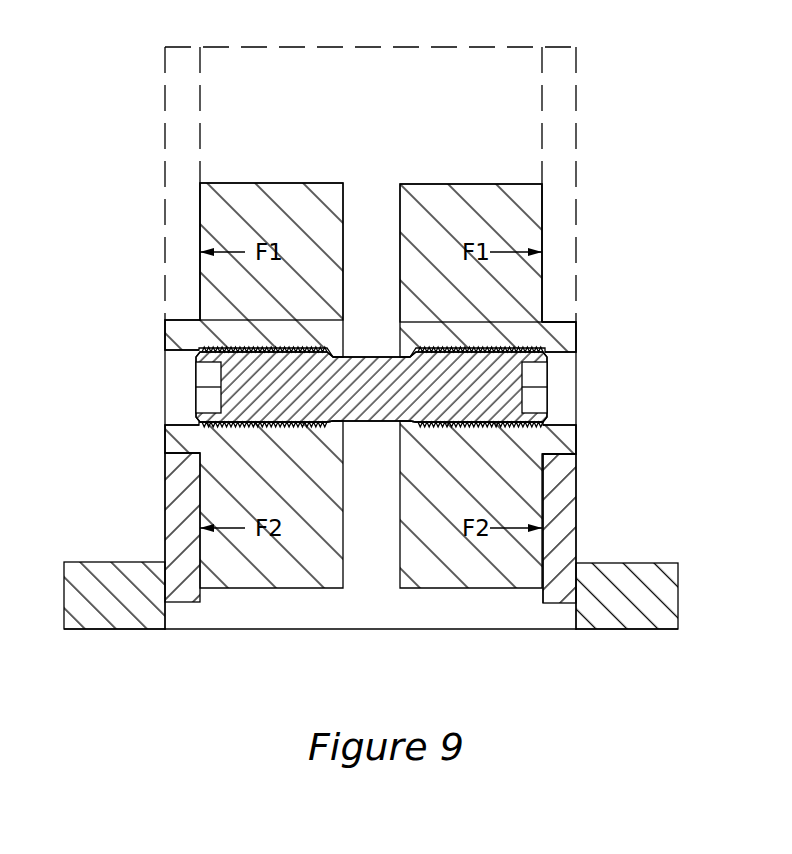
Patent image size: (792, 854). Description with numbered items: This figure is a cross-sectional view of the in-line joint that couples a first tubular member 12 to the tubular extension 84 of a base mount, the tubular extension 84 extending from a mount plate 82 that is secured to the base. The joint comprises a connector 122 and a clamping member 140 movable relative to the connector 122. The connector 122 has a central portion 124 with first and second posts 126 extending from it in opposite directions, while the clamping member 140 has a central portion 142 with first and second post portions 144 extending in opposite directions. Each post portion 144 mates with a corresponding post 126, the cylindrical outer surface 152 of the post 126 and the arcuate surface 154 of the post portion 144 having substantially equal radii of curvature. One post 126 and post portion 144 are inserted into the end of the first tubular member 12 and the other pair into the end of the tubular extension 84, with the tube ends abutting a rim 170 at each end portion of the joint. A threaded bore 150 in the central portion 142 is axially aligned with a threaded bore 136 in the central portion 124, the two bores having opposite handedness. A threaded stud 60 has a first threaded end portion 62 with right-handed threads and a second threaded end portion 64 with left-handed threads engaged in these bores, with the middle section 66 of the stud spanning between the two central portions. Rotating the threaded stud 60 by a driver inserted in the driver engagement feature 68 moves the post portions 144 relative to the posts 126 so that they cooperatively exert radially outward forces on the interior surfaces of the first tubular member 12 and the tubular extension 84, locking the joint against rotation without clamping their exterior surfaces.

The first tubular member 12 is at (565, 93).
The threaded stud 60 is at (290, 418).
The first threaded end portion 62 is at (255, 372).
The second threaded end portion 64 is at (505, 375).
The bolt shank 66 is at (373, 405).
The driver engagement feature 68 is at (210, 404).
The mount plate 82 is at (668, 598).
The tubular extension 84 is at (570, 517).
The connector 122 is at (515, 288).
The central portion 124 is at (578, 342).
The post 126 is at (427, 198).
The threaded bore 136 is at (522, 428).
The clamping member 140 is at (240, 292).
The central portion 142 is at (165, 337).
The post portion 144 is at (249, 198).
The threaded bore 150 is at (297, 407).
The cylindrical outer surface 152 is at (542, 203).
The arcuate surface 154 is at (200, 215).
The rim 170 is at (560, 322).